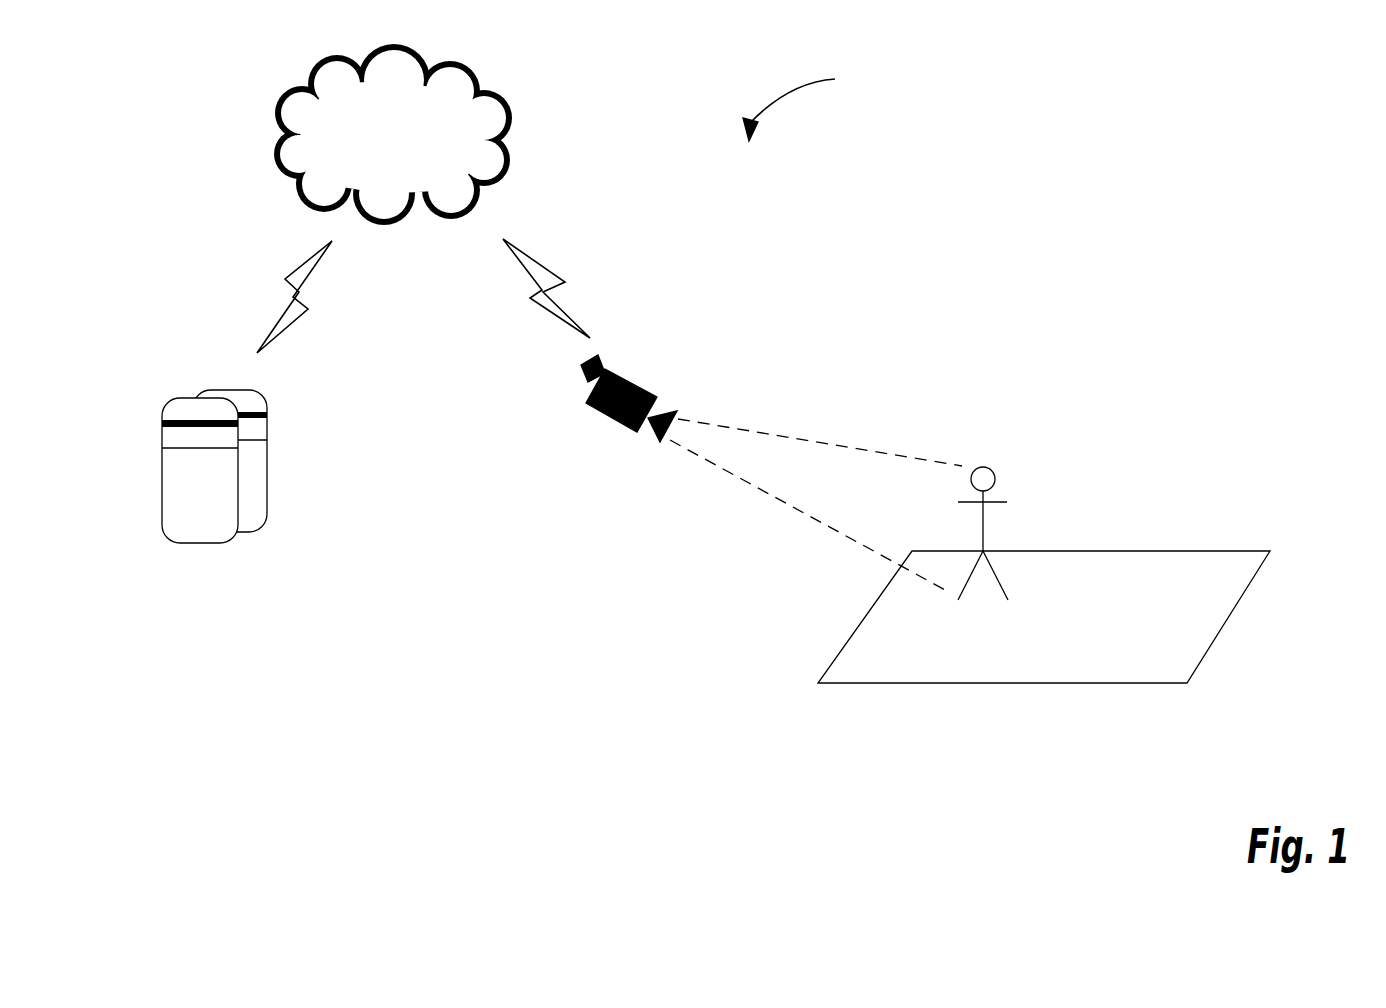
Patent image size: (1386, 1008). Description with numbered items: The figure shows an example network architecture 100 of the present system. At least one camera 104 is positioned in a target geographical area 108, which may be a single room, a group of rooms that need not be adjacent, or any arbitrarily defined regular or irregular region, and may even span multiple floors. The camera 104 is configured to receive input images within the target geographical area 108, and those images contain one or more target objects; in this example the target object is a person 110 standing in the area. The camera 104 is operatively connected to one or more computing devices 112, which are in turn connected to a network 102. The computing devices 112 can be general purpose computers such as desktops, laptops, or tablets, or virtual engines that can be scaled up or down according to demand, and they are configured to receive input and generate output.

The network architecture 100 is at (892, 93).
The network 102 is at (409, 131).
The camera 104 is at (623, 375).
The target geographical area 108 is at (1178, 591).
The person 110 is at (1007, 467).
The computing devices 112 is at (268, 493).